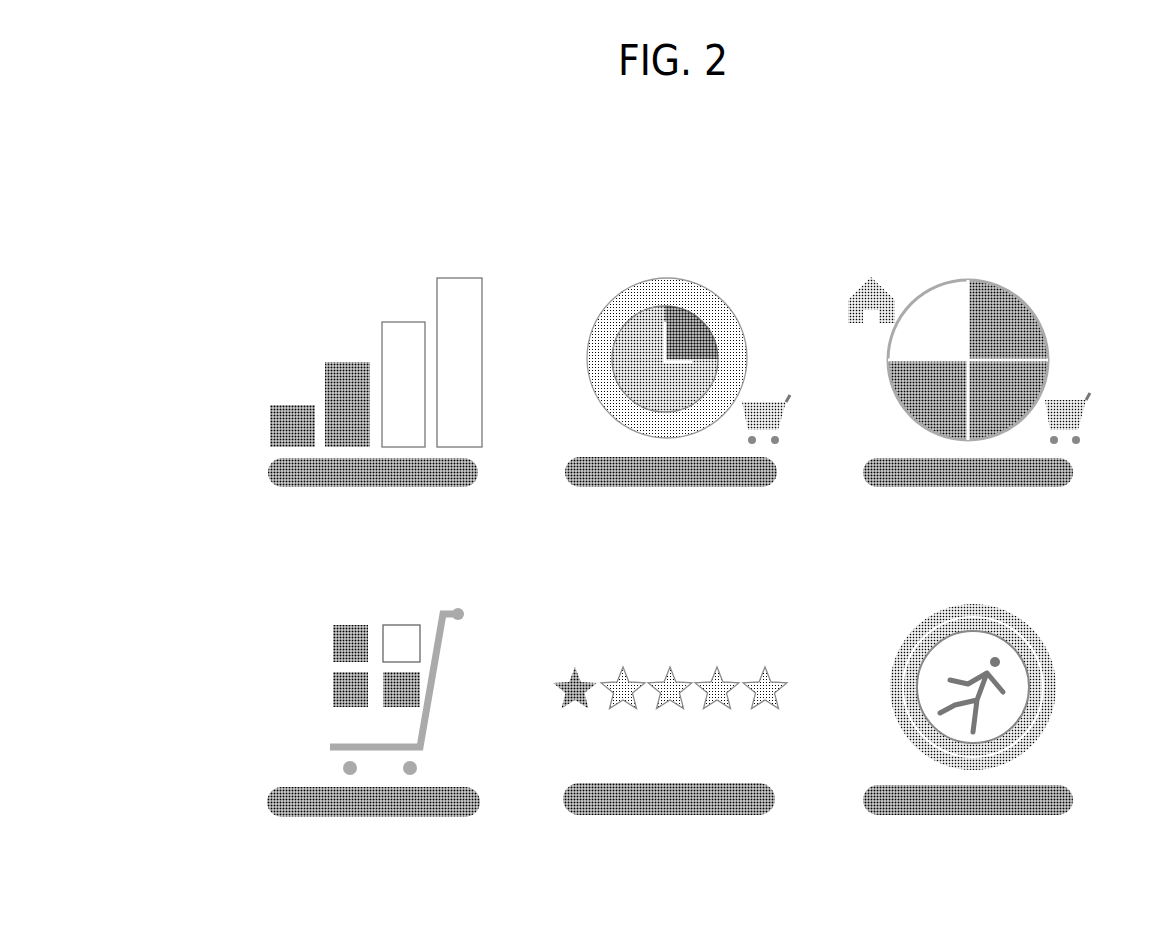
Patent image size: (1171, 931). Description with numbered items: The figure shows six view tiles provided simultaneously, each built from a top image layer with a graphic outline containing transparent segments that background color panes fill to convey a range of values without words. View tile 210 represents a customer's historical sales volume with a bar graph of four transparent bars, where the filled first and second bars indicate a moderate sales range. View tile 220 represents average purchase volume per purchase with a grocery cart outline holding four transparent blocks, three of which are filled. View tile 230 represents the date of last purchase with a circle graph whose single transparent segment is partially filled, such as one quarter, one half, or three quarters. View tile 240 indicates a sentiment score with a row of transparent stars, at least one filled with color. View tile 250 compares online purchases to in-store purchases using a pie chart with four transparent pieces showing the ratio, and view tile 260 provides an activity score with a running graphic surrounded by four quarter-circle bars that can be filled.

The view tile 210 is at (242, 231).
The view tile 220 is at (242, 561).
The view tile 230 is at (803, 218).
The view tile 240 is at (540, 773).
The view tile 250 is at (1098, 296).
The view tile 260 is at (1100, 580).